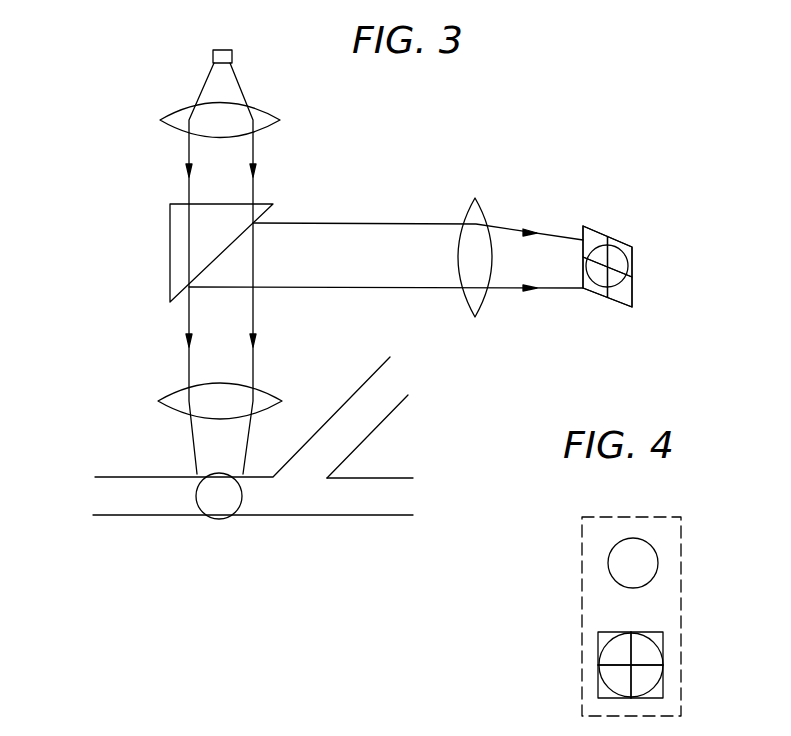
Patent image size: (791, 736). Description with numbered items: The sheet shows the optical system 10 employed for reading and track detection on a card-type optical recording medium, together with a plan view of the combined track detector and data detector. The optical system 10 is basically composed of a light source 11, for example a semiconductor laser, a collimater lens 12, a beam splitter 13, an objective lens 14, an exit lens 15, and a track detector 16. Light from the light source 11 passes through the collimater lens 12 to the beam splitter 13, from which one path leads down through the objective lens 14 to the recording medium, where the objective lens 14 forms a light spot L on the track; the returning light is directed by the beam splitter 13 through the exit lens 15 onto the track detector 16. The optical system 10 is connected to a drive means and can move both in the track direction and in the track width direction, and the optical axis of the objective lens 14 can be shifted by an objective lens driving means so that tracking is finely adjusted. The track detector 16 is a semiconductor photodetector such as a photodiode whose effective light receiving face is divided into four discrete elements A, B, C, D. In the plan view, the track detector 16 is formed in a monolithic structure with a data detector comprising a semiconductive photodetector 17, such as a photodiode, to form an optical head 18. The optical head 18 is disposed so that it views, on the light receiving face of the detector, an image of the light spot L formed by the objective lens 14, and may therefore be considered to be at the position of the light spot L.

In FIG. 3, the optical system 10 is at (162, 74).
In FIG. 3, the light source 11 is at (222, 50).
In FIG. 3, the collimater lens 12 is at (265, 113).
In FIG. 3, the beam splitter 13 is at (272, 203).
In FIG. 3, the objective lens 14 is at (265, 400).
In FIG. 3, the exit lens 15 is at (478, 210).
In FIG. 3, the track detector 16 is at (608, 258).
In FIG. 4, the track detector 16 is at (664, 669).
In FIG. 4, the semiconductive photodetector 17 is at (608, 565).
In FIG. 4, the optical head 18 is at (681, 565).
In FIG. 3, the light spot L is at (243, 502).
In FIG. 4, the light spot L is at (663, 692).
In FIG. 3, the discrete element A is at (592, 287).
In FIG. 4, the discrete element A is at (614, 648).
In FIG. 3, the discrete element B is at (592, 235).
In FIG. 4, the discrete element B is at (647, 648).
In FIG. 3, the discrete element C is at (620, 299).
In FIG. 4, the discrete element C is at (614, 681).
In FIG. 3, the discrete element D is at (624, 249).
In FIG. 4, the discrete element D is at (647, 681).